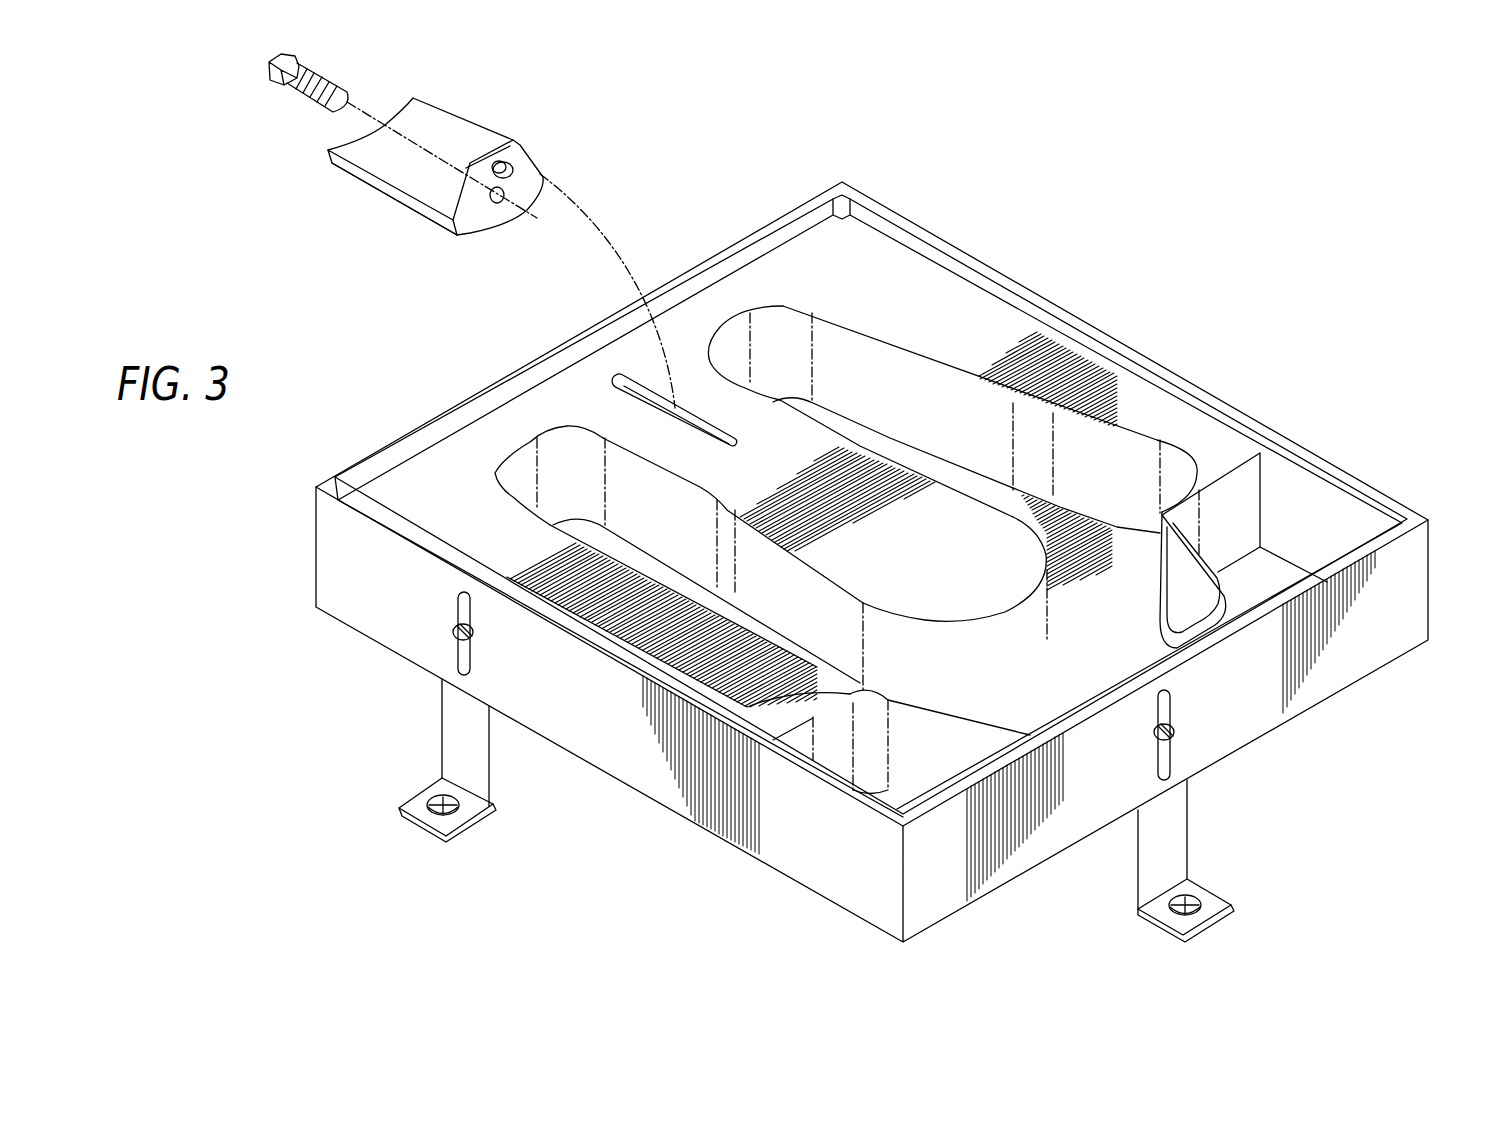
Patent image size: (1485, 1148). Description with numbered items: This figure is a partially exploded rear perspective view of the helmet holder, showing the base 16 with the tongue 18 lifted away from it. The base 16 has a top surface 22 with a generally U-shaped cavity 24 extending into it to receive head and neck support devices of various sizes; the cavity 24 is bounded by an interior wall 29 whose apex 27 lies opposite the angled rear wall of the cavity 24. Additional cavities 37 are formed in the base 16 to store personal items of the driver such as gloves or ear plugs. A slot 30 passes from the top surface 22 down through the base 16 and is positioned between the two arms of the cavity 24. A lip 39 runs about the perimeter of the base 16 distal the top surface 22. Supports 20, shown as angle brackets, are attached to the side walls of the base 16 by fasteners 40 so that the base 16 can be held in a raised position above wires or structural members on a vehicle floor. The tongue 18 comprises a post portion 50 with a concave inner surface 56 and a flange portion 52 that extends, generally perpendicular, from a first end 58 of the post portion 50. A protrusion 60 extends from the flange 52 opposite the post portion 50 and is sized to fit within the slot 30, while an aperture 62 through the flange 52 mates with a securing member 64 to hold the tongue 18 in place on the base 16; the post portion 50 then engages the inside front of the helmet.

The base 16 is at (613, 720).
The tongue 18 is at (427, 175).
The supports 20 is at (398, 808).
The top surface 22 is at (904, 302).
The cavity 24 is at (1108, 583).
The apex 27 is at (1026, 624).
The interior wall 29 is at (810, 616).
The slot 30 is at (618, 403).
The additional cavities 37 is at (1310, 540).
The lip 39 is at (1076, 338).
The fastener 40 is at (458, 632).
The post portion 50 is at (353, 177).
The flange portion 52 is at (517, 155).
The concave inner surface 56 is at (427, 127).
The first end 58 is at (437, 218).
The protrusion 60 is at (517, 170).
The aperture 62 is at (497, 200).
The securing member 64 is at (297, 95).